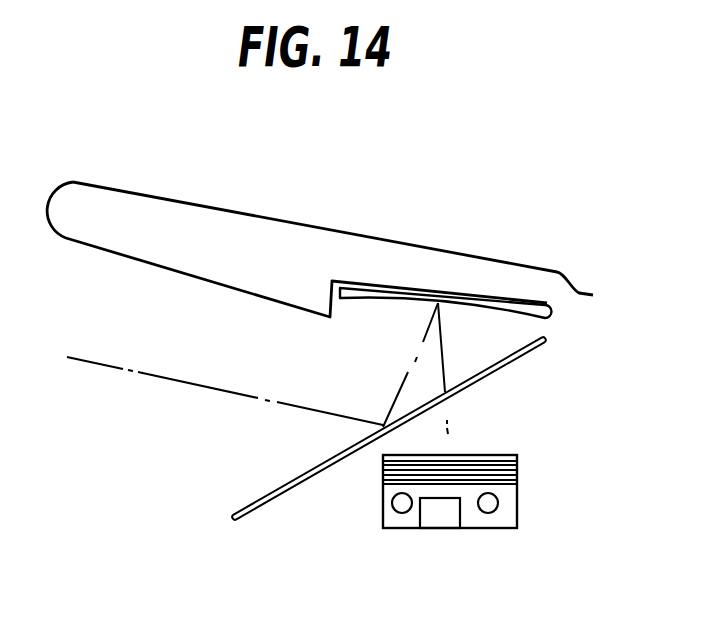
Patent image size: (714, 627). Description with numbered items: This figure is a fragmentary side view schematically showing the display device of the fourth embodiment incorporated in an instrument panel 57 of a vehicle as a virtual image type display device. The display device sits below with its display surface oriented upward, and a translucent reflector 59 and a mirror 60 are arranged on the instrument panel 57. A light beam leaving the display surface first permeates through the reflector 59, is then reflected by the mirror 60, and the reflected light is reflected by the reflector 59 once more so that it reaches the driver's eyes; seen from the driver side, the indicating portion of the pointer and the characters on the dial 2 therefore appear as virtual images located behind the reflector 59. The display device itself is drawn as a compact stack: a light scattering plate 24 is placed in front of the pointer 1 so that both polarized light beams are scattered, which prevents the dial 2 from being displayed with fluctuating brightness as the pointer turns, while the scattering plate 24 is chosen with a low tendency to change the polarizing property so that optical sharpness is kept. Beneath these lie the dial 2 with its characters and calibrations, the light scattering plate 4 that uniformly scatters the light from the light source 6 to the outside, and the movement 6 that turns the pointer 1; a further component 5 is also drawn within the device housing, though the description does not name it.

The instrument panel 57 is at (233, 245).
The mirror 60 is at (372, 290).
The translucent reflector 59 is at (253, 513).
The light scattering plate 24 is at (517, 457).
The pointer 1 is at (517, 465).
The dial 2 is at (517, 472).
The light scattering plate 4 is at (517, 482).
The element 5 is at (497, 508).
The movement 6 is at (432, 515).